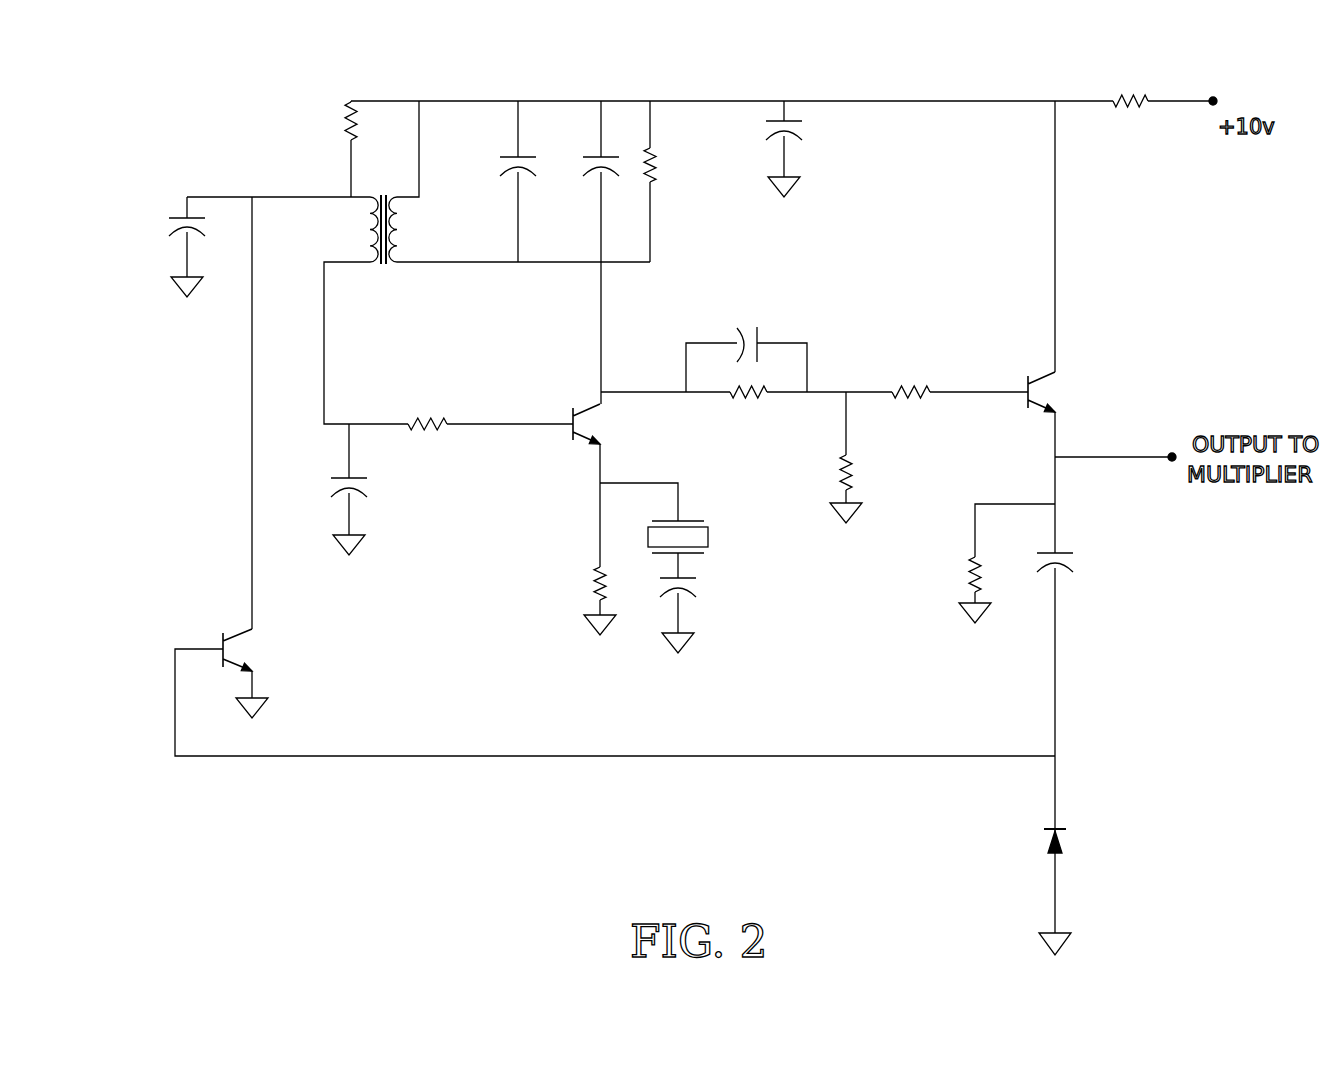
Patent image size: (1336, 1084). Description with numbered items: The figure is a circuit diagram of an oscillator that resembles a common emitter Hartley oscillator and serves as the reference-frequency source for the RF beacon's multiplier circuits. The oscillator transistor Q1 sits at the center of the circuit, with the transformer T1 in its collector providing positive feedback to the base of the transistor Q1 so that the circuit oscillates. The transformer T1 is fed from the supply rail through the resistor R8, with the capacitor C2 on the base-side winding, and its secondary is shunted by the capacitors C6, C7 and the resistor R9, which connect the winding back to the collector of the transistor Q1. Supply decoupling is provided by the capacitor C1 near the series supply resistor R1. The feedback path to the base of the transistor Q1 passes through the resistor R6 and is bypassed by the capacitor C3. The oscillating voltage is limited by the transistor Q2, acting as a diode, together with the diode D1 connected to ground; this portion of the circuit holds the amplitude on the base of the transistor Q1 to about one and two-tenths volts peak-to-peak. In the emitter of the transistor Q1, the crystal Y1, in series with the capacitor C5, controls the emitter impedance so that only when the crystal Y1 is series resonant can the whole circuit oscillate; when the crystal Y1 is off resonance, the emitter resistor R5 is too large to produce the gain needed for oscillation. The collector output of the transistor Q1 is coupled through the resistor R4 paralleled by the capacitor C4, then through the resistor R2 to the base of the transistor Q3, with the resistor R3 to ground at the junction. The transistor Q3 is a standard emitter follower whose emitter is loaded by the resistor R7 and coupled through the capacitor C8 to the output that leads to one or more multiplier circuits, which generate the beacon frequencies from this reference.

The resistor R8 is at (334, 149).
The capacitor C2 is at (202, 247).
The transformer T1 is at (381, 243).
The capacitor C6 is at (500, 181).
The capacitor C7 is at (585, 181).
The resistor R9 is at (670, 181).
The capacitor C1 is at (801, 149).
The resistor R1 is at (1130, 119).
The capacitor C4 is at (746, 345).
The resistor R4 is at (748, 407).
The resistor R2 is at (911, 407).
The resistor R3 is at (834, 457).
The transistor Q3 is at (1062, 392).
The transistor Q1 is at (603, 424).
The resistor R6 is at (427, 438).
The capacitor C3 is at (363, 489).
The crystal resonator Y1 is at (695, 549).
The capacitor C5 is at (696, 612).
The emitter resistor R5 is at (587, 601).
The resistor R7 is at (963, 590).
The capacitor C8 is at (1075, 566).
The transistor Q2 is at (254, 673).
The diode D1 is at (1073, 882).